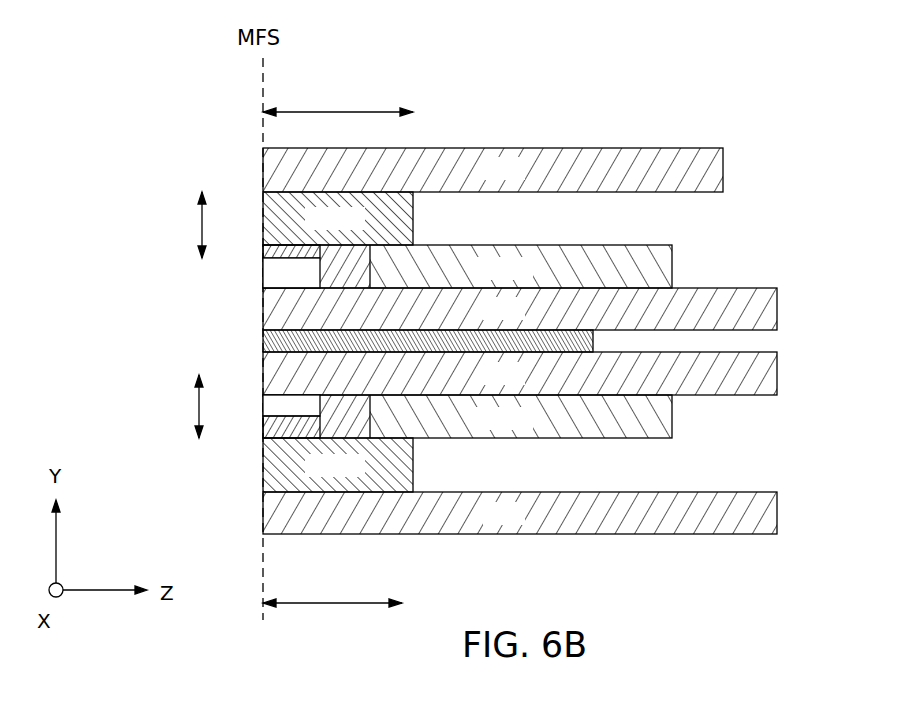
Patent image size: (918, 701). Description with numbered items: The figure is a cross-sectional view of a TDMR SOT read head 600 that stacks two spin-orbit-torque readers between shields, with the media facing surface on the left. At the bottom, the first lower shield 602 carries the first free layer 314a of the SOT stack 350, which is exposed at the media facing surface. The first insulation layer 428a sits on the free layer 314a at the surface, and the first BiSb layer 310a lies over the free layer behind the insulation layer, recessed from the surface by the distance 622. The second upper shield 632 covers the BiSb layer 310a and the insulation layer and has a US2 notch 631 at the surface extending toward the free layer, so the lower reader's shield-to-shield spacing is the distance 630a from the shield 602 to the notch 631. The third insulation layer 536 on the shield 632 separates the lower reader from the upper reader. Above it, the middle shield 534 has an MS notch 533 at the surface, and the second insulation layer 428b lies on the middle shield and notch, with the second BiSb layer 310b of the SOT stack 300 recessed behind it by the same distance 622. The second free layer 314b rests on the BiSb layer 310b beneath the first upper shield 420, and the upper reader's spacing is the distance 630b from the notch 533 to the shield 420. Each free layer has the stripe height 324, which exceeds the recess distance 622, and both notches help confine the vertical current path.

The TDMR SOT read head 600 is at (702, 76).
The first upper shield 420 is at (521, 178).
The second free layer 314b is at (361, 228).
The SOT stack 300 is at (692, 254).
The second BiSb layer 310b is at (529, 278).
The second insulation layer 428b is at (263, 250).
The MS notch 533 is at (310, 293).
The middle shield 534 is at (521, 318).
The third insulation layer 536 is at (263, 340).
The second upper shield 632 is at (519, 383).
The SOT stack 350 is at (692, 450).
The first BiSb layer 310a is at (529, 428).
The US2 notch 631 is at (310, 416).
The first insulation layer 428a is at (263, 428).
The first free layer 314a is at (361, 475).
The first lower shield 602 is at (521, 523).
The stripe height 324 is at (320, 112).
The distance 622 is at (331, 602).
The distance 630b is at (200, 225).
The distance 630a is at (198, 408).